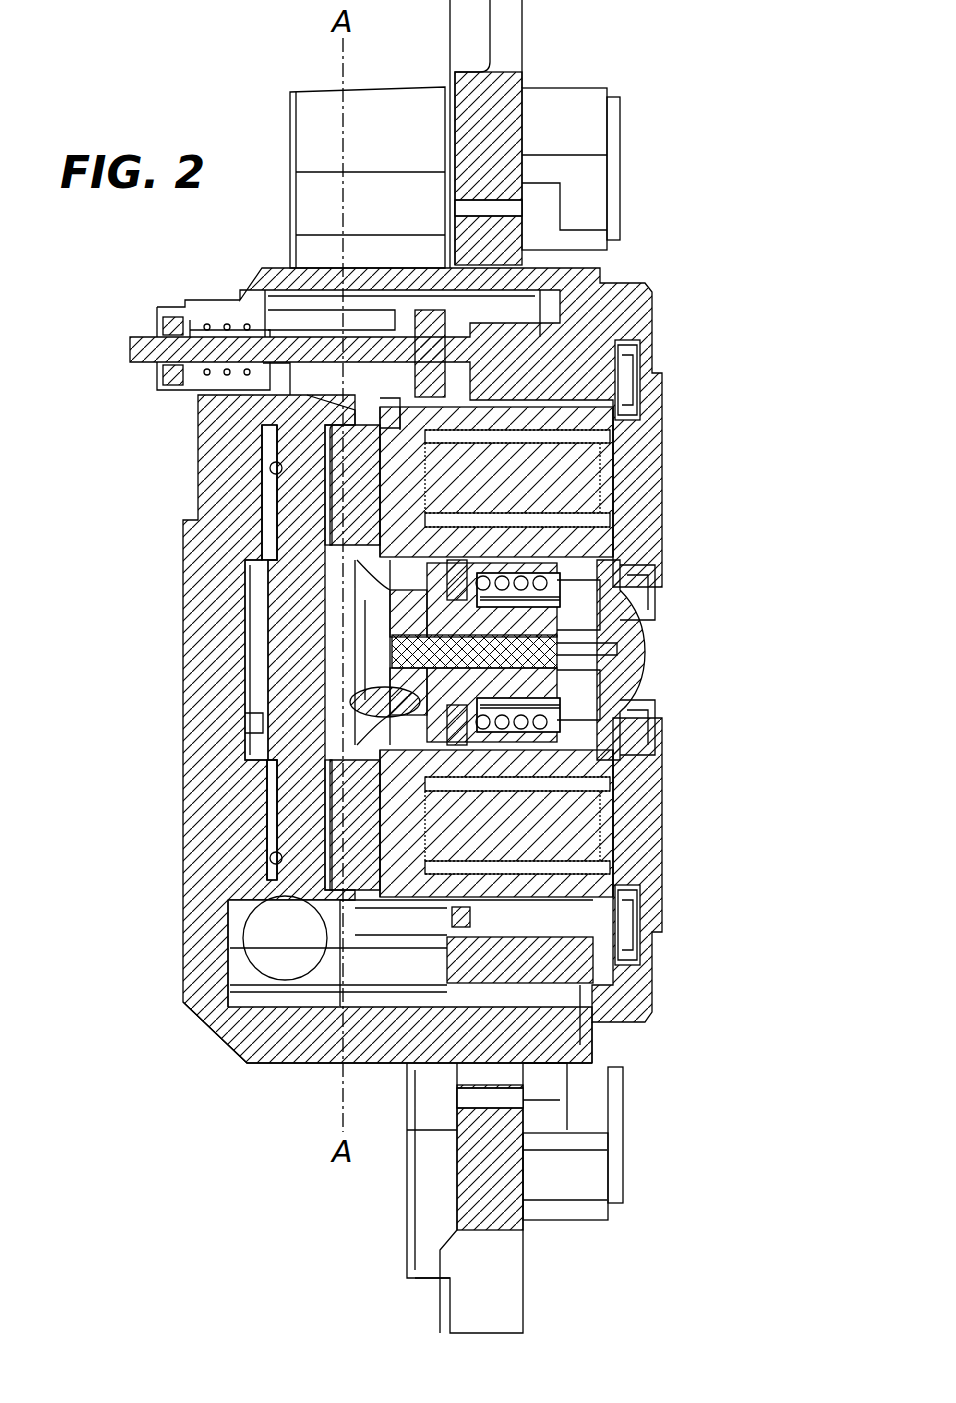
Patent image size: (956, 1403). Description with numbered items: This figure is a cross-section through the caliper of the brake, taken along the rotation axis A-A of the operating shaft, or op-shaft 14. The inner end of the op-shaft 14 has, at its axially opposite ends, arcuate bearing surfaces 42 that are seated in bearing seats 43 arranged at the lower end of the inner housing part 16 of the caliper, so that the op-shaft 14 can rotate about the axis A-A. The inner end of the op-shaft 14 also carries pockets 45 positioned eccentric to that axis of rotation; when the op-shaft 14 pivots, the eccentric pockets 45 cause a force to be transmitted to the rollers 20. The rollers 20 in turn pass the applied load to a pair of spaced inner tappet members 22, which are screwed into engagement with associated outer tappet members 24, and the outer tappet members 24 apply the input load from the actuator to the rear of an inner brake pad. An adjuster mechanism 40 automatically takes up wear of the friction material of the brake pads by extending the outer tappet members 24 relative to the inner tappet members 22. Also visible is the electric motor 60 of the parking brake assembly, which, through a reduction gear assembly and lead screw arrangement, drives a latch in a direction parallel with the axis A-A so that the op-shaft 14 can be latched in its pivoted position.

The operating shaft 14 is at (300, 643).
The inner housing part 16 is at (262, 1063).
The rollers 20 is at (358, 455).
The inner tappet members 22 is at (612, 481).
The outer tappet members 24 is at (593, 433).
The adjuster mechanism 40 is at (157, 746).
The arcuate bearing surfaces 42 is at (263, 505).
The bearing seats 43 is at (282, 468).
The pockets 45 is at (338, 449).
The electric motor 60 is at (280, 930).